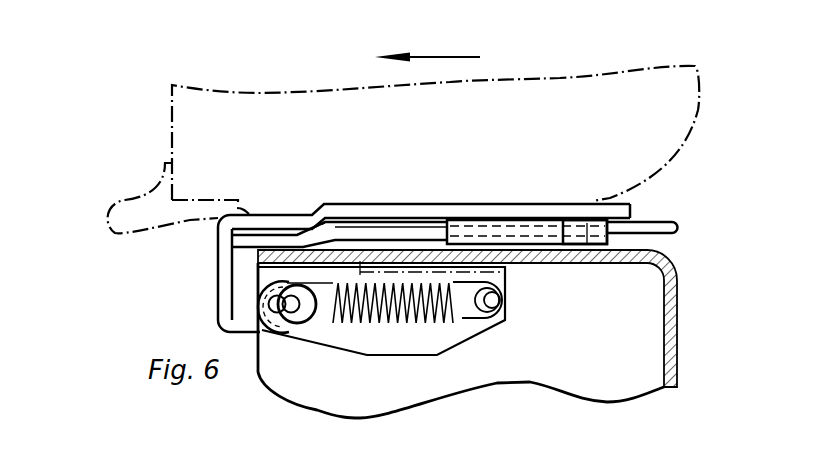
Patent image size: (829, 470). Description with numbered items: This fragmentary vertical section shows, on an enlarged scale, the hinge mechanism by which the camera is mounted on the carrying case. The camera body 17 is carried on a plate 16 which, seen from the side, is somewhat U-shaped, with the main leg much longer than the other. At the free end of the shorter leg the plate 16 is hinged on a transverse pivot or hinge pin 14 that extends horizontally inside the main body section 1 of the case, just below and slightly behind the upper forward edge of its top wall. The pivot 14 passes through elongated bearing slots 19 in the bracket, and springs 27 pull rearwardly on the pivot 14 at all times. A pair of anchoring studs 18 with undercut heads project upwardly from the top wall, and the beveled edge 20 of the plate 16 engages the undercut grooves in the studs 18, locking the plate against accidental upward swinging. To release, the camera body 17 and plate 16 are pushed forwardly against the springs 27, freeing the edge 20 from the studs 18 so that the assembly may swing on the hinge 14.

The main body section 1 is at (664, 306).
The transverse pivot or hinge pin 14 is at (290, 313).
The plate 16 is at (631, 207).
The camera body 17 is at (532, 90).
The anchoring studs 18 is at (588, 224).
The elongated bearing slots 19 is at (270, 304).
The beveled edge 20 is at (565, 231).
The springs 27 is at (401, 315).